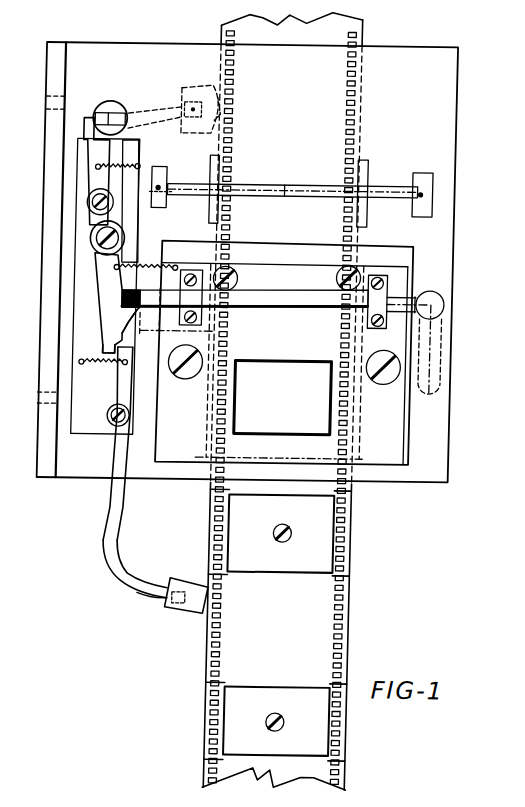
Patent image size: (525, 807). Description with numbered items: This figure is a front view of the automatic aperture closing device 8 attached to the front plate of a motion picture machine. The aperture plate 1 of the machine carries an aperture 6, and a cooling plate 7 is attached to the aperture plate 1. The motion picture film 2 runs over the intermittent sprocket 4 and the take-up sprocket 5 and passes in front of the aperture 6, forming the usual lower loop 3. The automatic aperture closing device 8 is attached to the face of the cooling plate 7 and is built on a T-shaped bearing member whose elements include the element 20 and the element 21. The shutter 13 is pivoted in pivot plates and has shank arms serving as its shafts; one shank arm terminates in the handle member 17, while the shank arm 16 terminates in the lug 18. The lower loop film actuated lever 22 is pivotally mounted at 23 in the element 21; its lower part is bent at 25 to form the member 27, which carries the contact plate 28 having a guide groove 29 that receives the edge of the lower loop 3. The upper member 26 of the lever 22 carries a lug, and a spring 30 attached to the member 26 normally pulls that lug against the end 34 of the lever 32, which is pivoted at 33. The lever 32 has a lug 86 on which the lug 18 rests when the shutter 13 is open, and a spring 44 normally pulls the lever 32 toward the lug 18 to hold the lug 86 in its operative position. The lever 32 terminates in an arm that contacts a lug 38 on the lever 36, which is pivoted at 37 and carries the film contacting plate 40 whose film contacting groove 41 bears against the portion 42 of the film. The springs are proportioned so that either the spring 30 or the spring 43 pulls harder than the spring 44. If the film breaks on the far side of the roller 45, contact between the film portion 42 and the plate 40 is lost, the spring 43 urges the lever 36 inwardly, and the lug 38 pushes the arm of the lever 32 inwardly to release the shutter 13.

The aperture plate 1 is at (449, 120).
The motion picture film 2 is at (360, 773).
The lower loop 3 is at (359, 636).
The intermittent sprocket 4 is at (360, 531).
The take-up sprocket 5 is at (360, 736).
The aperture 6 is at (283, 398).
The cooling plate 7 is at (391, 365).
The automatic aperture closing device 8 is at (270, 270).
The shutter 13 is at (278, 297).
The shank arm 16 is at (169, 296).
The handle member 17 is at (437, 353).
The lug 18 is at (143, 289).
The element of T shaped bearing member 20 is at (141, 216).
The element of T shaped bearing member 21 is at (88, 415).
The lower loop film actuated lever 22 is at (135, 507).
The pivot 23 is at (140, 413).
The bend 25 is at (126, 556).
The upper member 26 is at (124, 399).
The member 27 is at (164, 600).
The contact plate 28 is at (195, 575).
The guide groove 29 is at (222, 592).
The spring 30 is at (108, 366).
The lever 32 is at (110, 262).
The pivot 33 is at (94, 237).
The end of lever 34 is at (110, 341).
The lever 36 is at (95, 158).
The pivot 37 is at (91, 200).
The lug 38 is at (104, 146).
The film contacting plate 40 is at (182, 89).
The film contacting groove 41 is at (221, 101).
The portion of the film 42 is at (221, 78).
The spring 43 is at (133, 162).
The spring 44 is at (145, 259).
The roller 45 is at (215, 153).
The lug 86 is at (134, 313).